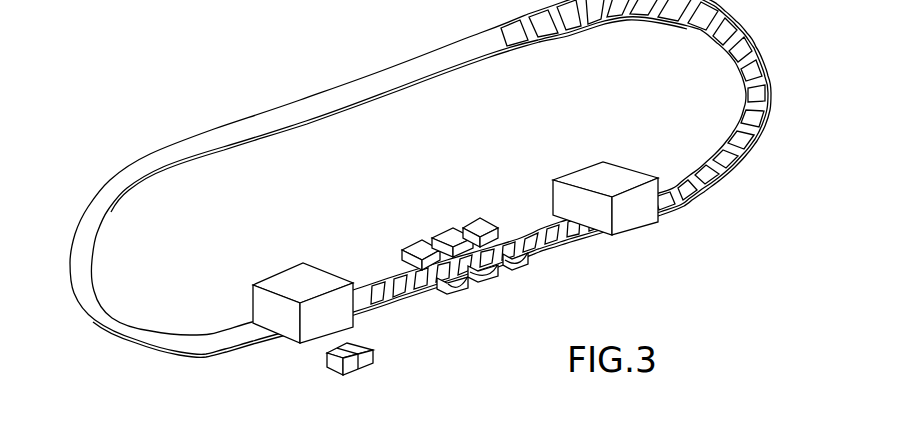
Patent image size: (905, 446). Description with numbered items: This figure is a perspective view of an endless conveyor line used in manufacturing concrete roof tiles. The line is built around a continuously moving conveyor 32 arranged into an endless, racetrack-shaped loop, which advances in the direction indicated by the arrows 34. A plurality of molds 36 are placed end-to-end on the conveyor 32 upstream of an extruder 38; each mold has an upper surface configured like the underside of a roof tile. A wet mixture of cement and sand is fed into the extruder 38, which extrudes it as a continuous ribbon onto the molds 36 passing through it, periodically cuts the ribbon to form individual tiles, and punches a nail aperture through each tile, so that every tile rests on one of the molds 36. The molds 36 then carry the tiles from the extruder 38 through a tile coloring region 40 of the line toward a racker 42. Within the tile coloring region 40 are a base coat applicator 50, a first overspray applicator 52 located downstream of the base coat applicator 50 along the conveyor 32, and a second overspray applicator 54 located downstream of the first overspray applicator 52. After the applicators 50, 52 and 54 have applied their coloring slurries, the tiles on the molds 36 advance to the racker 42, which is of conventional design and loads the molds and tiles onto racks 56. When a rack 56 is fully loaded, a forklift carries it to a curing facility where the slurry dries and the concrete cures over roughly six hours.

The conveyor 32 is at (102, 292).
The arrows 34 is at (383, 102).
The molds 36 is at (768, 90).
The extruder 38 is at (607, 172).
The tile coloring region 40 is at (448, 221).
The racker 42 is at (293, 281).
The base coat applicator 50 is at (482, 222).
The first overspray applicator 52 is at (439, 232).
The second overspray applicator 54 is at (403, 257).
The racks 56 is at (375, 352).